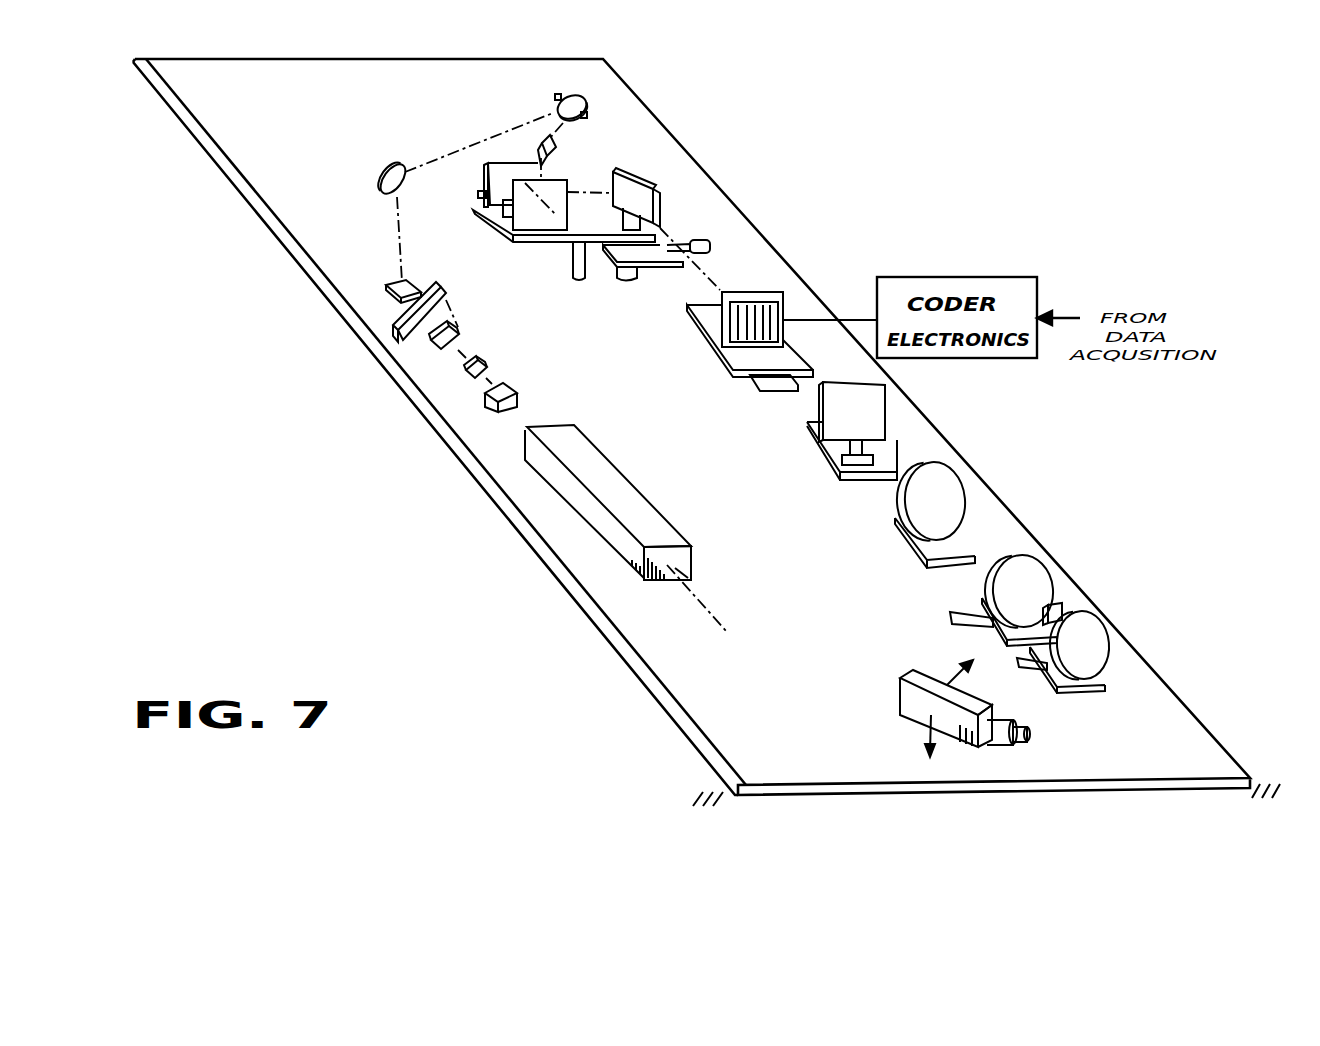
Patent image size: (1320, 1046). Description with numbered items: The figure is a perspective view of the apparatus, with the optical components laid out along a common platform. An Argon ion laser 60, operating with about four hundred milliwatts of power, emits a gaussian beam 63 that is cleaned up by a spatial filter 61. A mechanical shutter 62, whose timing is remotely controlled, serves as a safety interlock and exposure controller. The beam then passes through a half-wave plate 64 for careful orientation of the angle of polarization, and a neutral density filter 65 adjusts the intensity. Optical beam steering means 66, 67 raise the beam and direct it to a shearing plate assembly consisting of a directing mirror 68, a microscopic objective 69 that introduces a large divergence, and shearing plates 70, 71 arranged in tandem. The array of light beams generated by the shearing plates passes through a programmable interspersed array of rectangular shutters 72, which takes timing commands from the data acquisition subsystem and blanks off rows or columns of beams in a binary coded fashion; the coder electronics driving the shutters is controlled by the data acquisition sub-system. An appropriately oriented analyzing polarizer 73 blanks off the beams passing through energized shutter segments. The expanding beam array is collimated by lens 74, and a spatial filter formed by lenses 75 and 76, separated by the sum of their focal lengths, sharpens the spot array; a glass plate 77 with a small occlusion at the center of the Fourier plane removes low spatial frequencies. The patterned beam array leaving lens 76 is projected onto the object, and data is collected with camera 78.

The Argon ion laser 60 is at (580, 517).
The spatial filter 61 is at (487, 402).
The mechanical shutter 62 is at (488, 358).
The gaussian beam 63 is at (518, 415).
The half-wave plate 64 is at (458, 332).
The neutral density filter 65 is at (397, 337).
The optical beam steering means 66 is at (387, 297).
The optical beam steering means 67 is at (402, 168).
The directing mirror 68 is at (587, 102).
The microscopic objective 69 is at (560, 152).
The shearing plate 70 is at (557, 183).
The shearing plate 71 is at (653, 187).
The programmable interspersed array of rectangular shutters 72 is at (768, 293).
The analyzing polarizer 73 is at (885, 408).
The lens 74 is at (957, 477).
The lens 75 is at (1047, 567).
The lens 76 is at (1105, 627).
The glass plate 77 is at (1060, 603).
The camera 78 is at (898, 717).